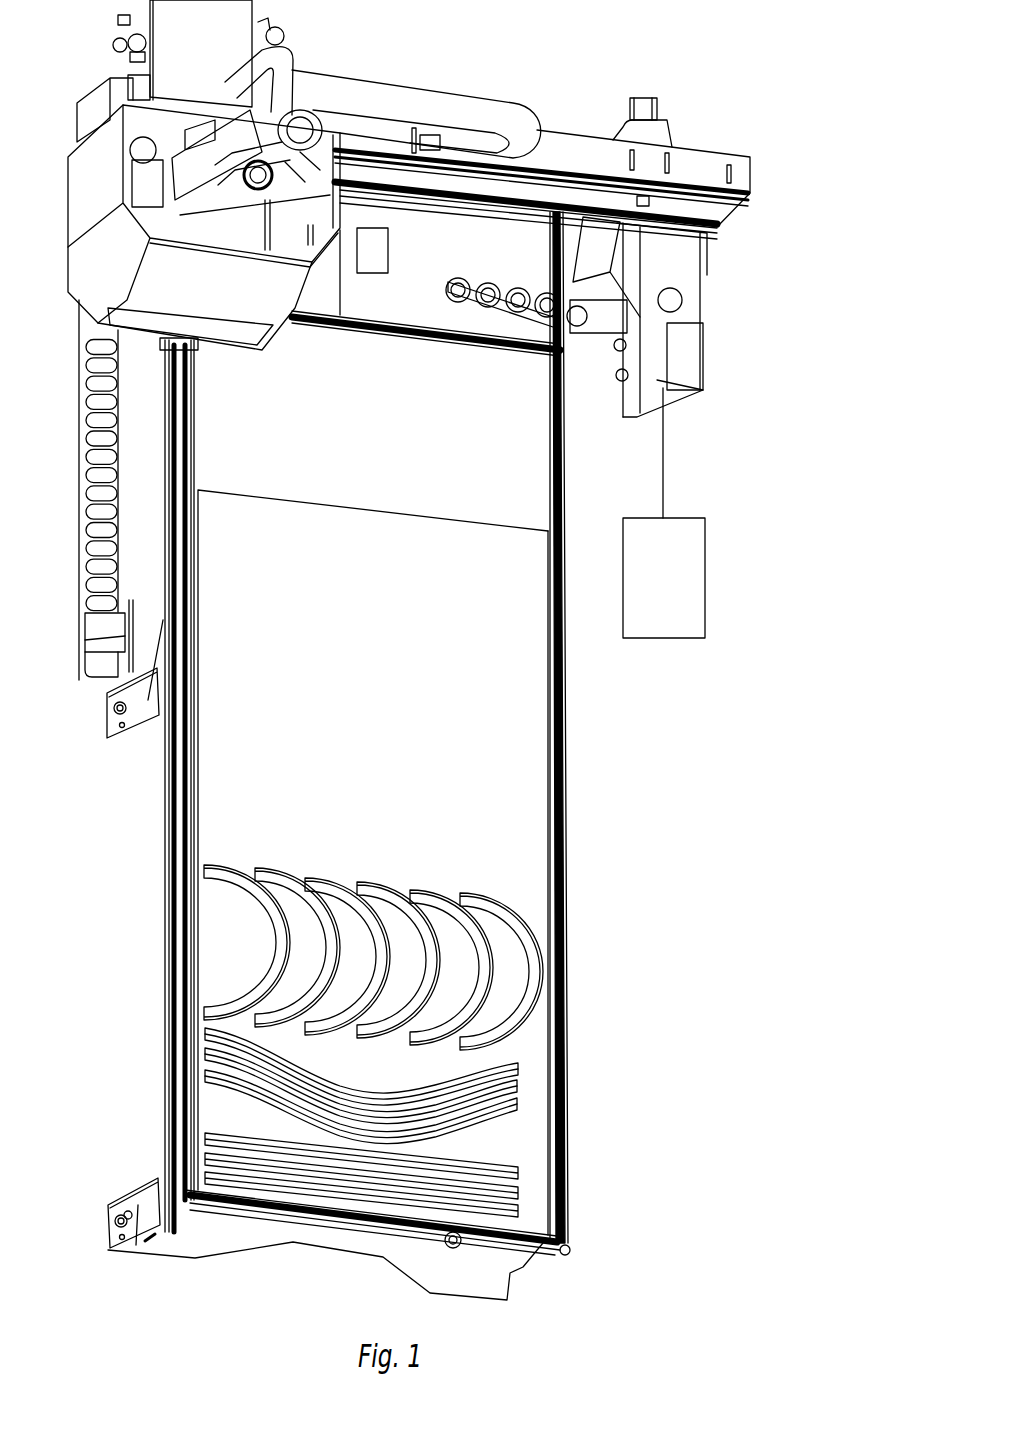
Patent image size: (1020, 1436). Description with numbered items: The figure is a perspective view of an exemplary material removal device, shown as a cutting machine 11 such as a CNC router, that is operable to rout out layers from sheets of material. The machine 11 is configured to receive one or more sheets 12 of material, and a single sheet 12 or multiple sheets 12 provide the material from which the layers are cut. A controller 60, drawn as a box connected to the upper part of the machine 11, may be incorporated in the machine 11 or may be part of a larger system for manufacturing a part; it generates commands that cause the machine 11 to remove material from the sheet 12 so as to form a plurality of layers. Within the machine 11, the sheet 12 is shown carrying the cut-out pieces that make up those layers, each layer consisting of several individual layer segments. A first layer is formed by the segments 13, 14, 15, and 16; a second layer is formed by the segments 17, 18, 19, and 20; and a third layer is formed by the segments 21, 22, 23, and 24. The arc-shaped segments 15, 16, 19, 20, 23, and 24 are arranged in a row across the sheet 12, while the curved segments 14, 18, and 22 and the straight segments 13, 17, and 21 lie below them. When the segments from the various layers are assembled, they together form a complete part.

The cutting machine 11 is at (790, 85).
The sheet of material 12 is at (323, 490).
The layer segment 13 is at (520, 1206).
The layer segment 14 is at (520, 1108).
The layer segment 15 is at (227, 872).
The layer segment 16 is at (272, 876).
The layer segment 17 is at (520, 1188).
The layer segment 18 is at (520, 1087).
The layer segment 19 is at (328, 882).
The layer segment 20 is at (373, 884).
The layer segment 21 is at (520, 1168).
The layer segment 22 is at (520, 1068).
The layer segment 23 is at (436, 893).
The layer segment 24 is at (480, 897).
The controller 60 is at (652, 592).